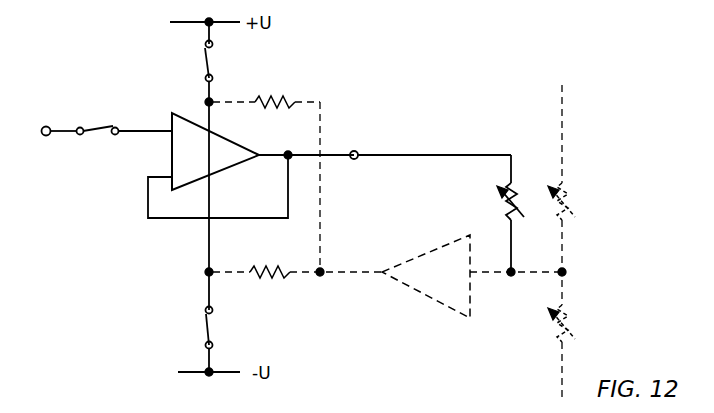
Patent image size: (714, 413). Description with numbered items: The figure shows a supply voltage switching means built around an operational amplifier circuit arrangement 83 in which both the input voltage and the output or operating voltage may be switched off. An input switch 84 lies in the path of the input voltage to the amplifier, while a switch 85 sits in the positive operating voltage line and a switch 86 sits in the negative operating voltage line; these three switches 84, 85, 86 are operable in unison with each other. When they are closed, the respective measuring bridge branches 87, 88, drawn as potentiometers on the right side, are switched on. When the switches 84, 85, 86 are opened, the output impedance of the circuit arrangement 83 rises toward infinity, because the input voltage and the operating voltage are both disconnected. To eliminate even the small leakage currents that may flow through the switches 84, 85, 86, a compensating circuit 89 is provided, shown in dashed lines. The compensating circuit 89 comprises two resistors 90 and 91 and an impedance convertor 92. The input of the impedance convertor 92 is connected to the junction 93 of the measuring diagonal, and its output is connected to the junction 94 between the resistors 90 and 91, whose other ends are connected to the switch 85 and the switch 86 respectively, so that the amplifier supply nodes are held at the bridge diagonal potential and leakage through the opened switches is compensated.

The operational amplifier circuit arrangement 83 is at (362, 89).
The switch 84 is at (93, 128).
The switch 85 is at (204, 66).
The switch 86 is at (206, 332).
The measuring bridge branch 87 is at (570, 190).
The measuring bridge branch 88 is at (552, 330).
The compensating circuit 89 is at (341, 236).
The resistor 90 is at (276, 82).
The resistor 91 is at (272, 295).
The impedance convertor 92 is at (437, 250).
The junction of the measuring diagonal 93 is at (582, 265).
The junction of the resistors 94 is at (326, 282).